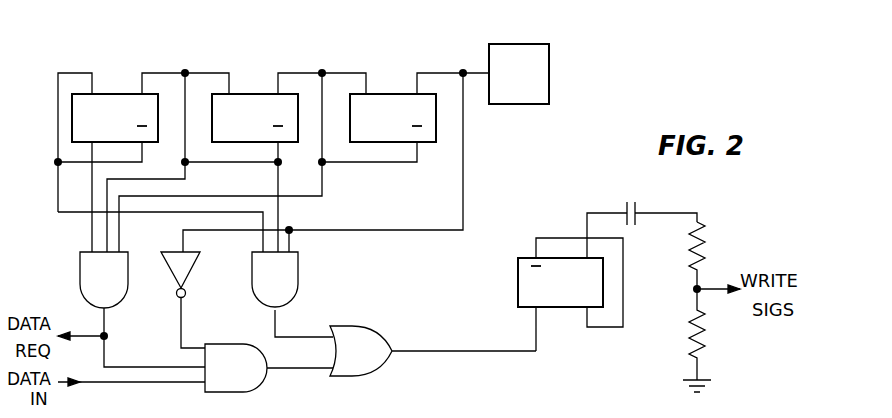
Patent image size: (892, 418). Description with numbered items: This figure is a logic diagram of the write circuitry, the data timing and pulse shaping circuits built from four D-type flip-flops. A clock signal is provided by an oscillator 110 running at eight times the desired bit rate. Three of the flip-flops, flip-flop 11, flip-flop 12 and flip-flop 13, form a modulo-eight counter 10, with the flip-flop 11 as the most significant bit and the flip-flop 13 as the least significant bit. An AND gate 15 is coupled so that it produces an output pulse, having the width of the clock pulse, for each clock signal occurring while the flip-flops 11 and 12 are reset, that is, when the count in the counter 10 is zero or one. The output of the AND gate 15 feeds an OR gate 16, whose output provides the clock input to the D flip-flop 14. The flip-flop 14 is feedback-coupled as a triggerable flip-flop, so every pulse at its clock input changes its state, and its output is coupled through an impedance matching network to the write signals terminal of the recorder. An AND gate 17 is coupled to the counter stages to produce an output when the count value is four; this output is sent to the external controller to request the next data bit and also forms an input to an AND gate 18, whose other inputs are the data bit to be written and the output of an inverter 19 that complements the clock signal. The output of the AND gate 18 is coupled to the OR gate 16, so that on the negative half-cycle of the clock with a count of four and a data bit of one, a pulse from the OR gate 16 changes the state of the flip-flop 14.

The modulo-8 counter 10 is at (263, 45).
The D-type flip-flop 11 is at (118, 91).
The D-type flip-flop 12 is at (255, 91).
The D-type flip-flop 13 is at (395, 93).
The D flip-flop 14 is at (518, 295).
The AND gate 15 is at (299, 272).
The OR gate 16 is at (393, 321).
The AND gate 17 is at (80, 254).
The AND gate 18 is at (262, 383).
The inverter 19 is at (193, 268).
The oscillator 110 is at (549, 67).